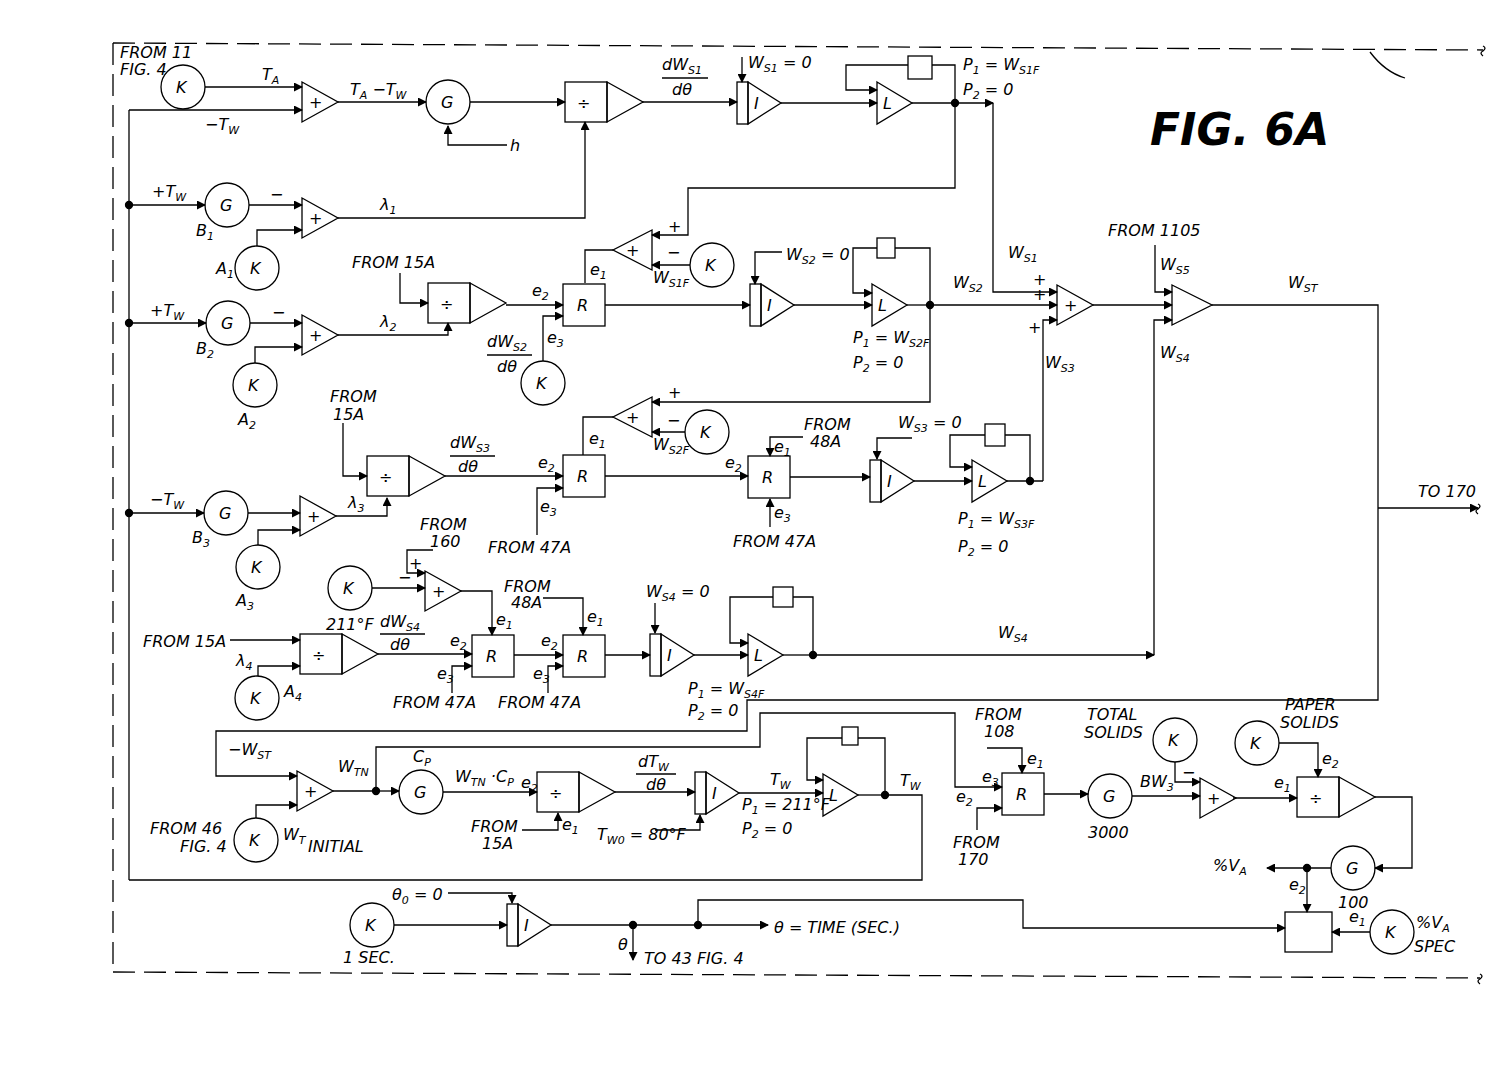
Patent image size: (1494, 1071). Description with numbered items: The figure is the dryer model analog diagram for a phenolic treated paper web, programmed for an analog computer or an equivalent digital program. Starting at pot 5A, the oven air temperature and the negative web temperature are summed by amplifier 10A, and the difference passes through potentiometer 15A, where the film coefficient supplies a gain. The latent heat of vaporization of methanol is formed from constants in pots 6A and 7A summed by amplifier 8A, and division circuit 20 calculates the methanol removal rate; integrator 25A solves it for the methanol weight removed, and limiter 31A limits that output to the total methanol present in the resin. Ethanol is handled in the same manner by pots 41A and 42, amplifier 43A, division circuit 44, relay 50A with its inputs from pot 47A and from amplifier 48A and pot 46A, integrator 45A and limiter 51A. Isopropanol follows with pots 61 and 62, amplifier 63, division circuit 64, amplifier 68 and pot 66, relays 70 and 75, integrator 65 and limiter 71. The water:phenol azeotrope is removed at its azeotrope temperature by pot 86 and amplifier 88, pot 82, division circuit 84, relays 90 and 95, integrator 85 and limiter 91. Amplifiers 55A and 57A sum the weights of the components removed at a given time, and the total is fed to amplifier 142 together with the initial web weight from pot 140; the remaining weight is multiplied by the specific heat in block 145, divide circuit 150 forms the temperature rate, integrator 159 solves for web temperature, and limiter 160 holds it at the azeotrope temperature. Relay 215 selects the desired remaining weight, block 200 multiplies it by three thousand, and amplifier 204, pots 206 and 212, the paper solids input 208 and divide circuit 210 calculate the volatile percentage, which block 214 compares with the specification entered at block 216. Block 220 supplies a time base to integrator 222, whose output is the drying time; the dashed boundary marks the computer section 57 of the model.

The pot 5A is at (200, 70).
The amplifier 10A is at (308, 86).
The potentiometer 15A is at (448, 80).
The division circuit 20 is at (600, 80).
The integrator 25A is at (768, 115).
The limiter 31A is at (890, 120).
The pot 6A is at (237, 184).
The amplifier 8A is at (310, 200).
The pot 7A is at (279, 268).
The pot 41A is at (212, 308).
The amplifier 43A is at (310, 316).
The pot 42 is at (233, 385).
The division circuit 44 is at (445, 282).
The relay 50A is at (577, 282).
The pot 47A is at (565, 372).
The amplifier 48A is at (627, 238).
The pot 46A is at (712, 243).
The integrator 45A is at (780, 318).
The limiter 51A is at (882, 292).
The amplifier 55A is at (1075, 318).
The amplifier 57A is at (1192, 290).
The computer section (FIG. 4) 57 is at (1405, 83).
The amplifier 68 is at (628, 405).
The pot 66 is at (729, 432).
The relay 70 is at (575, 452).
The relay 75 is at (745, 496).
The integrator 65 is at (900, 495).
The limiter 71 is at (990, 468).
The pot 61 is at (221, 492).
The amplifier 63 is at (295, 498).
The pot 62 is at (236, 567).
The division circuit 64 is at (378, 456).
The pot 86 is at (342, 568).
The amplifier 88 is at (440, 582).
The relay 90 is at (515, 640).
The pot 82 is at (235, 690).
The division circuit 84 is at (320, 677).
The relay 95 is at (598, 680).
The integrator 85 is at (672, 640).
The limiter 91 is at (768, 640).
The amplifier 142 is at (310, 770).
The pot 140 is at (253, 817).
The Cp multiplier 145 is at (398, 804).
The divide circuit 150 is at (575, 771).
The integrator 159 is at (715, 772).
The limiter 160 is at (835, 780).
The relay 215 is at (1020, 815).
The multiplier 200 is at (1094, 781).
The pot 206 is at (1154, 750).
The block 208 is at (1243, 723).
The amplifier 204 is at (1215, 810).
The divide circuit 210 is at (1345, 781).
The pot 212 is at (1350, 850).
The comparator block 214 is at (1283, 912).
The block 216 is at (1390, 911).
The time base block 220 is at (350, 916).
The integrator 222 is at (538, 910).